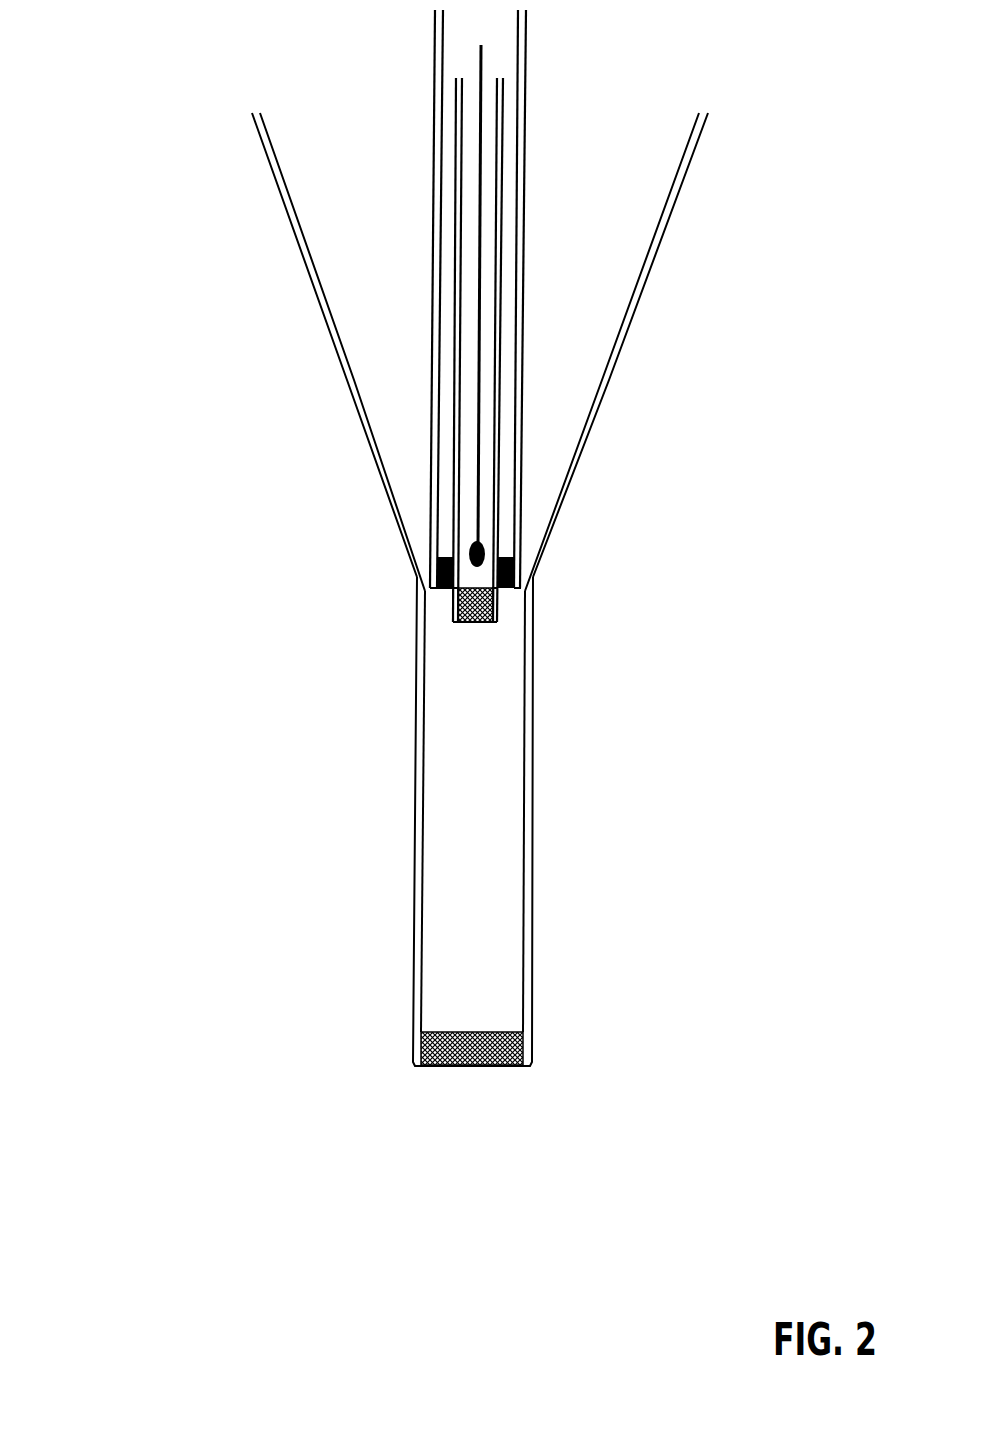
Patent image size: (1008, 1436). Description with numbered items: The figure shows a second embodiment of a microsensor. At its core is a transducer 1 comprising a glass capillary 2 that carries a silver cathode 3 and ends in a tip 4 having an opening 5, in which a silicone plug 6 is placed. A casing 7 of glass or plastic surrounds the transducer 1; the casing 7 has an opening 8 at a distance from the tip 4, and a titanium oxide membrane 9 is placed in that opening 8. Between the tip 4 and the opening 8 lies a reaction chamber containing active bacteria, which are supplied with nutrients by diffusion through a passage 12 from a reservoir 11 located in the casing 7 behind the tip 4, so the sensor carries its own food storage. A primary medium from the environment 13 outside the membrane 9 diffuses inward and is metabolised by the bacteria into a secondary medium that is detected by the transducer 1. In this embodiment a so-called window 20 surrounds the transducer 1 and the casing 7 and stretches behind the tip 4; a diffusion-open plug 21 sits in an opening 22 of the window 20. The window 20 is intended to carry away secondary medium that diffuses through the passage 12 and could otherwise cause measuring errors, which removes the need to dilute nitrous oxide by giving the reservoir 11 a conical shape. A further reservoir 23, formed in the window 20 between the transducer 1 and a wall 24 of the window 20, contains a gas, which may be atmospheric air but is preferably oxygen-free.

The transducer 1 is at (510, 370).
The glass capillary 2 is at (497, 412).
The cathode 3 is at (480, 450).
The tip 4 is at (497, 602).
The opening 5 is at (487, 630).
The plug 6 is at (478, 624).
The casing 7 is at (265, 218).
The opening 8 is at (513, 1086).
The membrane 9 is at (479, 1066).
The reservoir 11 is at (330, 190).
The passage 12 is at (438, 577).
The environment 13 is at (405, 1228).
The window 20 is at (502, 316).
The diffusion-open plug 21 is at (446, 598).
The opening 22 is at (443, 590).
The reservoir 23 is at (447, 405).
The wall 24 is at (435, 355).